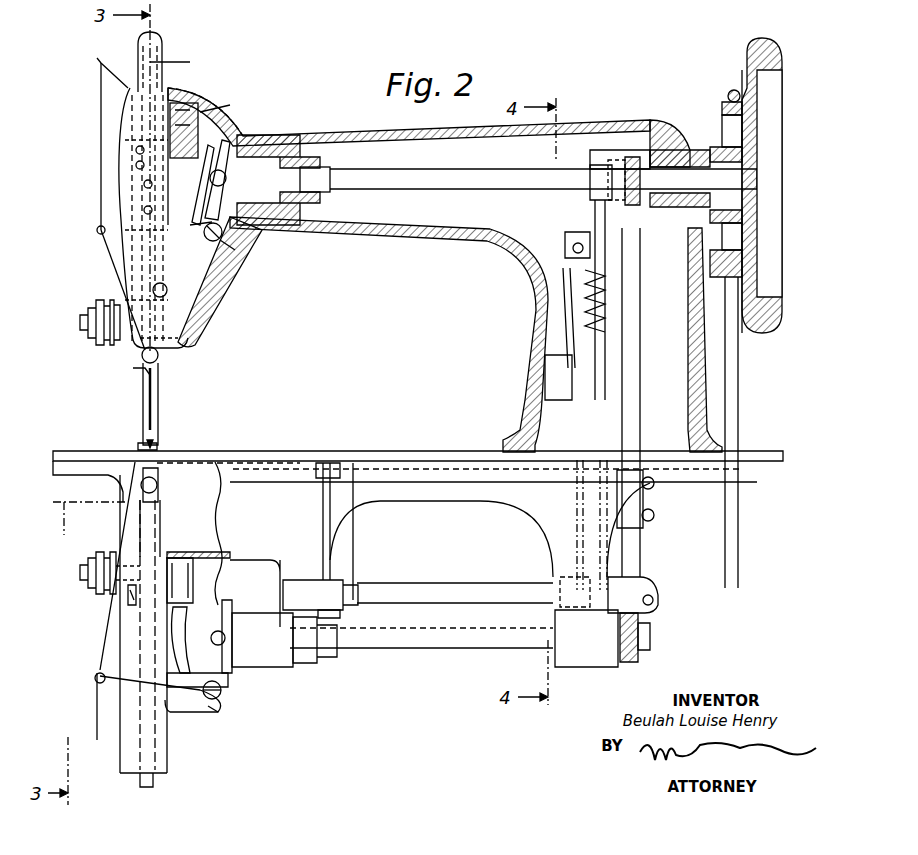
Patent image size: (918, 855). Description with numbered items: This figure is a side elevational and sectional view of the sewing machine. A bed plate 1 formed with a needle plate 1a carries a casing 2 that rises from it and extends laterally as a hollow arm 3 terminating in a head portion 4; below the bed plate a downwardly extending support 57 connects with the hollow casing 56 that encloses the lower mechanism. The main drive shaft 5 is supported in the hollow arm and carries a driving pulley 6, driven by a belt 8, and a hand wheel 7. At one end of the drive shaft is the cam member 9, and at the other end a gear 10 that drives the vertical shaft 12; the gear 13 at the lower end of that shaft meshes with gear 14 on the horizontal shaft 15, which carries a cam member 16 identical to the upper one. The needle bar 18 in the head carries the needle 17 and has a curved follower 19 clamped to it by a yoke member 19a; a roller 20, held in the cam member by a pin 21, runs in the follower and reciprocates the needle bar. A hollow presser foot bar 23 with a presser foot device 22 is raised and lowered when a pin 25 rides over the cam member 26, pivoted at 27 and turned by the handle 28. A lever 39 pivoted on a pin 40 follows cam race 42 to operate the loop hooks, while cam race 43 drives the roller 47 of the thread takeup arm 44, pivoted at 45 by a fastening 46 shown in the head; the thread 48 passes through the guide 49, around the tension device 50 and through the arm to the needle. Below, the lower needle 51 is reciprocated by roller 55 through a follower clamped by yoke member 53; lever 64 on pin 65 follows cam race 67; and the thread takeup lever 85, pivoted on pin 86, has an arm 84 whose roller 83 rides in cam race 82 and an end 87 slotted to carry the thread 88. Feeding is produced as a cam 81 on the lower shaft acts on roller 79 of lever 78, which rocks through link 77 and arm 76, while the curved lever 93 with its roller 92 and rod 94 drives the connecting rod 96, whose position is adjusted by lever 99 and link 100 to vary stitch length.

The bed plate 1 is at (387, 462).
The needle plate 1a is at (216, 452).
The casing 2 is at (700, 352).
The hollow arm 3 is at (403, 240).
The head portion 4 is at (195, 318).
The main drive shaft 5 is at (474, 185).
The driving pulley 6 is at (720, 106).
The hand wheel 7 is at (758, 39).
The belt 8 is at (733, 90).
The cam member 9 is at (256, 130).
The gear 10 is at (630, 155).
The vertical shaft 12 is at (641, 318).
The gear 13 is at (652, 624).
The gear 14 is at (630, 665).
The horizontal shaft 15 is at (424, 640).
The cam member 16 is at (230, 678).
The needle 17 is at (158, 398).
The needle bar 18 is at (185, 340).
The curved follower 19 is at (136, 164).
The yoke member 19a is at (136, 146).
The roller 20 is at (172, 124).
The pin 21 is at (222, 102).
The presser foot device 22 is at (160, 447).
The presser foot bar 23 is at (142, 413).
The pin 25 is at (144, 185).
The cam member 26 is at (144, 207).
The pivot 27 is at (97, 228).
The handle 28 is at (168, 290).
The lever 39 is at (194, 92).
The pin 40 is at (214, 110).
The cam race 42 is at (226, 138).
The cam race 43 is at (236, 150).
The thread takeup arm 44 is at (196, 235).
The pivot 45 is at (225, 245).
The screw 46 is at (222, 236).
The roller 47 is at (230, 180).
The thread 48 is at (110, 268).
The guide 49 is at (99, 65).
The tension device 50 is at (104, 345).
The lower needle 51 is at (142, 433).
The yoke member 53 is at (130, 608).
The roller 55 is at (155, 620).
The hollow casing 56 is at (120, 722).
The support 57 is at (552, 548).
The lever 64 is at (176, 575).
The pin 65 is at (195, 575).
The cam race 67 is at (185, 610).
The arm 76 is at (336, 462).
The link 77 is at (328, 512).
The lever 78 is at (312, 580).
The roller 79 is at (340, 614).
The cam 81 is at (326, 662).
The cam race 82 is at (228, 610).
The roller 83 is at (226, 640).
The arm 84 is at (222, 694).
The thread takeup lever 85 is at (196, 708).
The pin 86 is at (212, 706).
The end 87 is at (95, 680).
The thread 88 is at (108, 630).
The roller 92 is at (598, 165).
The curved lever 93 is at (594, 215).
The rod 94 is at (570, 250).
The rod 96 is at (580, 362).
The lever 99 is at (562, 333).
The link 100 is at (568, 292).